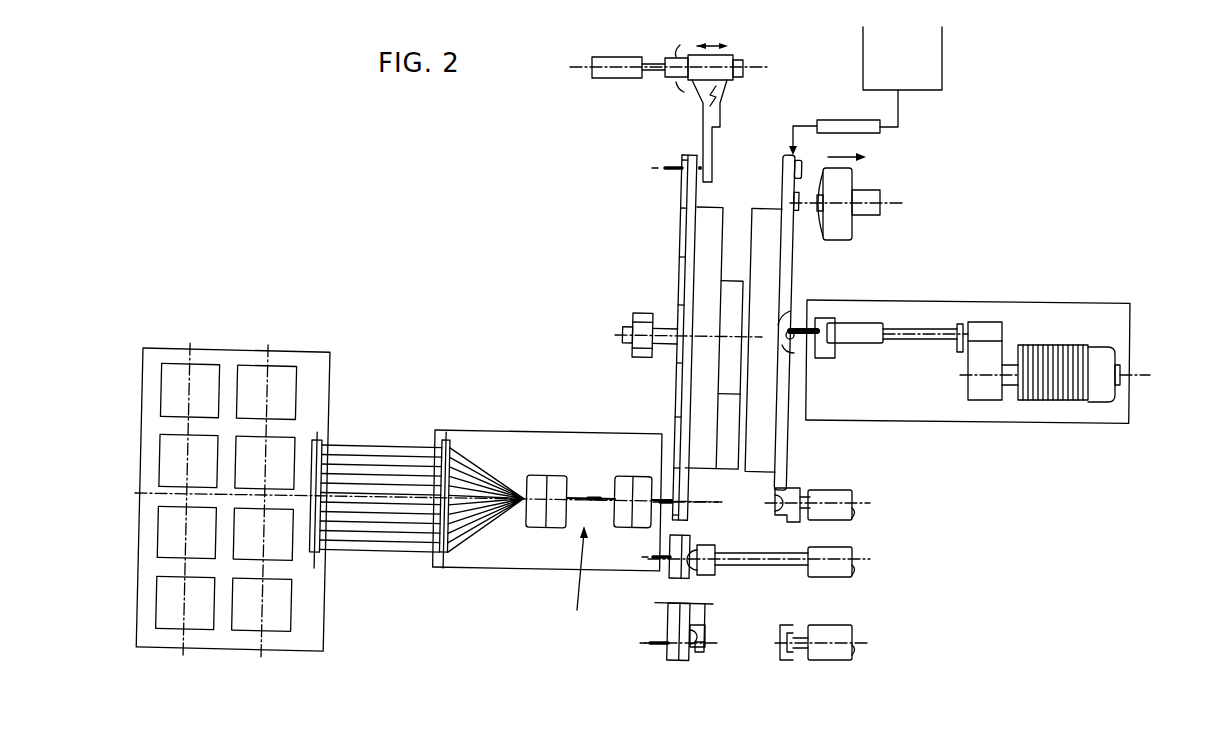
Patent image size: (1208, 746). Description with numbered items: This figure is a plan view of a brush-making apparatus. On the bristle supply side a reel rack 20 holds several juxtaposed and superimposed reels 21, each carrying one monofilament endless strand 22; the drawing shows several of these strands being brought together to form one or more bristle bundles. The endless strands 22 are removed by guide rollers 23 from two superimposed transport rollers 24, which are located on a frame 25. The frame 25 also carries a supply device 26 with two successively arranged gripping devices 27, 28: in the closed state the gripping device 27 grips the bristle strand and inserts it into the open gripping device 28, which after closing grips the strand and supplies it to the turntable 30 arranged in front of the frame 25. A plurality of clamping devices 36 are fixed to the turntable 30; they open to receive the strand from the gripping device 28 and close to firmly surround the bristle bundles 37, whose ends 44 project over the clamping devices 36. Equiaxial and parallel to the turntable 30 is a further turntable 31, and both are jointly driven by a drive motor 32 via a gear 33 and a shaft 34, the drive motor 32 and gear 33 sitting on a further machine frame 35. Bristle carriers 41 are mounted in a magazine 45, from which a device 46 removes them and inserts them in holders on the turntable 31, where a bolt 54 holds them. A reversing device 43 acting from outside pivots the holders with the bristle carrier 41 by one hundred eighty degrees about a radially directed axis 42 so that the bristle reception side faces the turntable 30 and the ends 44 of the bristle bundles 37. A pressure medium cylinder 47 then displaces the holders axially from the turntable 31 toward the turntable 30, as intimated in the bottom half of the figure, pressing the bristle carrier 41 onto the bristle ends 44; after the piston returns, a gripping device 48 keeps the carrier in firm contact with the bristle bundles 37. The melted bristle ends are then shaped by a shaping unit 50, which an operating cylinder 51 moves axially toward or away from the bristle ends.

The reel rack 20 is at (157, 352).
The reels 21 is at (198, 376).
The monofilament endless strand 22 is at (372, 458).
The guide rollers 23 is at (317, 557).
The transport rollers 24 is at (440, 558).
The frame 25 is at (509, 553).
The supply device 26 is at (575, 582).
The gripping device 27 is at (536, 482).
The gripping device 28 is at (626, 486).
The turntable 30 is at (682, 193).
The further turntable 31 is at (797, 462).
The drive motor 32 is at (1055, 345).
The gear 33 is at (990, 328).
The shaft 34 is at (930, 330).
The further machine frame 35 is at (1117, 338).
The clamping devices 36 is at (677, 235).
The bristle bundles 37 is at (672, 162).
The bristle carrier 41 is at (775, 503).
The radially directed axis 42 is at (790, 327).
The reversing device 43 is at (868, 330).
The ends of the bristle bundles 44 is at (695, 501).
The magazine 45 is at (932, 70).
The device 46 is at (862, 128).
The pressure medium cylinder 47 is at (850, 500).
The gripping device 48 is at (705, 650).
The shaping unit 50 is at (717, 120).
The operating cylinder 51 is at (598, 72).
The bolt 54 is at (870, 197).